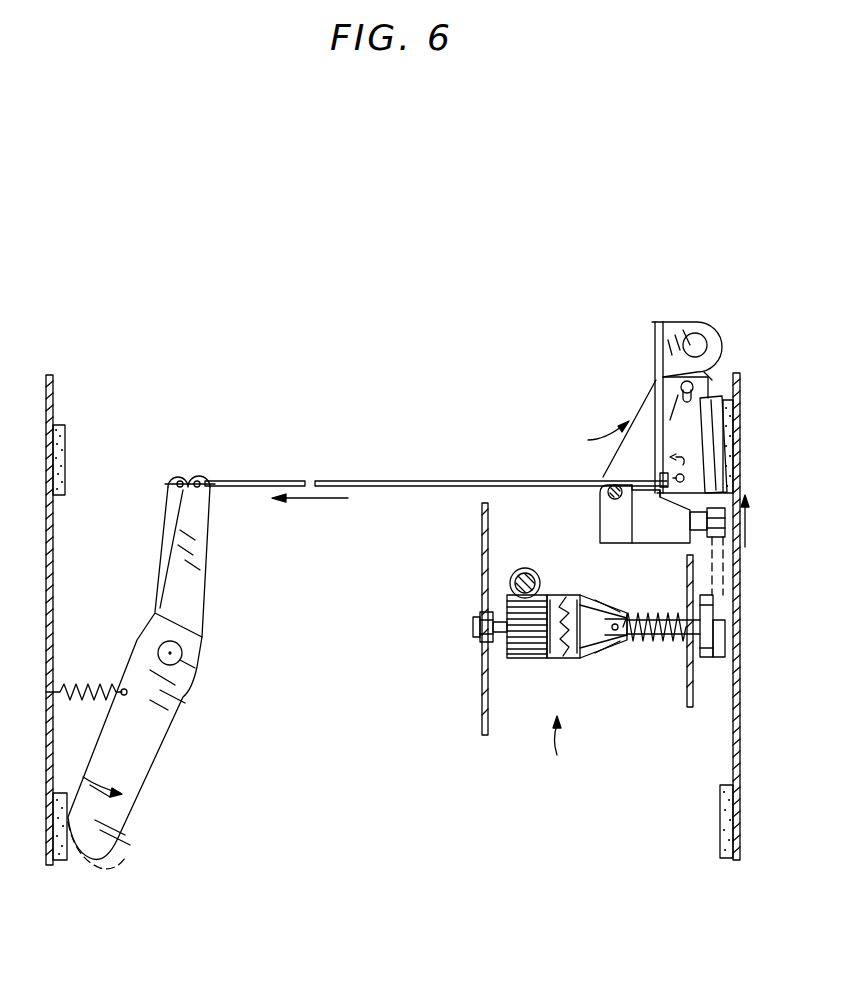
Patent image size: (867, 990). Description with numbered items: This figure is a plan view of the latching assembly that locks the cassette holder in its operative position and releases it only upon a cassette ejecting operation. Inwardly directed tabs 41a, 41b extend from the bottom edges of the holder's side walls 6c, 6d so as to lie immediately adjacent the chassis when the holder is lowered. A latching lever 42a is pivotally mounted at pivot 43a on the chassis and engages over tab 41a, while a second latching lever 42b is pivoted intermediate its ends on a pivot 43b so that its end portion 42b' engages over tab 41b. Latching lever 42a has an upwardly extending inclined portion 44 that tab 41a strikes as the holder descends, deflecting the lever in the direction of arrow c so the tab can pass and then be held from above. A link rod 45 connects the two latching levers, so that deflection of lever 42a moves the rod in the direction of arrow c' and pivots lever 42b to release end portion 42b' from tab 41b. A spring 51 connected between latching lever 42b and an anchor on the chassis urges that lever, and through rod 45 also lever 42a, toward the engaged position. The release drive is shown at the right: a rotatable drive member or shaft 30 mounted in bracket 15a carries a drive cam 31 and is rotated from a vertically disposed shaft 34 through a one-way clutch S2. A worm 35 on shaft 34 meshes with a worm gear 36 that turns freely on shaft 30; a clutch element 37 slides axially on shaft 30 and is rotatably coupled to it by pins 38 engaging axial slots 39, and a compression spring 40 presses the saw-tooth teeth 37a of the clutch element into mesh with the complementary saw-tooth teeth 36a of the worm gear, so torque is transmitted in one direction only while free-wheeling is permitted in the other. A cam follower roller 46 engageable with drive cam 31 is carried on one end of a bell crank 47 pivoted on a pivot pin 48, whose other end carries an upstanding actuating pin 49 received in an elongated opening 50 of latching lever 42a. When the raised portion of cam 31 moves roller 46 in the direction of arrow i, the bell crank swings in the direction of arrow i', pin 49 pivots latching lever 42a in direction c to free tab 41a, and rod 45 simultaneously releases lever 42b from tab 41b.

The side wall 6d is at (53, 571).
The side wall 6c is at (741, 718).
The tab 41b is at (67, 860).
The tab 41a is at (730, 414).
The latching lever 42b is at (155, 736).
The end portion of latching lever 42b' is at (145, 848).
The pivot 43b is at (183, 653).
The pivot 43a is at (694, 342).
The latching lever 42a is at (687, 407).
The inclined portion 44 is at (728, 473).
The link rod 45 is at (393, 470).
The cam follower roller 46 is at (722, 540).
The bell crank 47 is at (640, 412).
The pivot pin 48 is at (610, 491).
The actuating pin 49 is at (708, 378).
The elongated opening 50 is at (682, 388).
The spring 51 is at (96, 686).
The bracket 15a is at (483, 730).
The drive member or shaft 30 is at (500, 637).
The drive cam 31 is at (723, 612).
The vertically disposed shaft 34 is at (516, 575).
The worm 35 is at (535, 576).
The worm gear 36 is at (528, 658).
The saw-tooth teeth 36a is at (568, 656).
The clutch element 37 is at (590, 600).
The saw-tooth teeth 37a is at (565, 596).
The pins 38 is at (618, 640).
The axial slots 39 is at (612, 618).
The compression spring 40 is at (705, 595).
The arrow c is at (684, 472).
The arrow c' is at (310, 517).
The arrow i is at (756, 521).
The arrow i' is at (605, 432).
The one-way clutch S2 is at (567, 748).